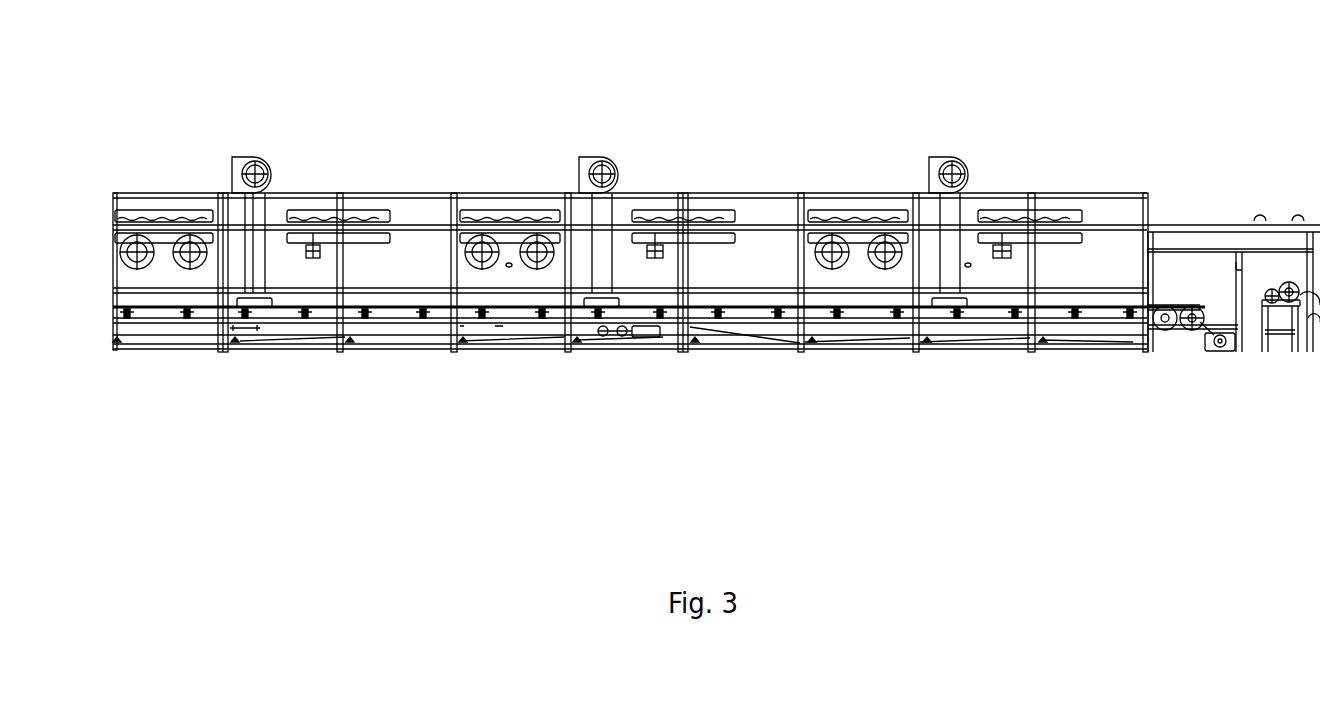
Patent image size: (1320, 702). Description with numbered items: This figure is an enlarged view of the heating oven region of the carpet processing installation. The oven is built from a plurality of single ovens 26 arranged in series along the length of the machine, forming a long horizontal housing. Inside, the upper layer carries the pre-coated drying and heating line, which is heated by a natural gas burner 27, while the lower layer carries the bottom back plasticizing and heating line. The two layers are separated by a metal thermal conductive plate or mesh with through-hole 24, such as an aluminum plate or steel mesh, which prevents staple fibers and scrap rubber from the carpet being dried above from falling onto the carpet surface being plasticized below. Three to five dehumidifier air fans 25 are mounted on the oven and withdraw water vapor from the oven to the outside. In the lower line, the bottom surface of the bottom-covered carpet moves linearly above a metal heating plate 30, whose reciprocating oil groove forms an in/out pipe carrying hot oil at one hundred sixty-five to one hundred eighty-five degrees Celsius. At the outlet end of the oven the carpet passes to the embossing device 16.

The embossing device 16 is at (1283, 290).
The metal thermal conductive plate or mesh with through-hole 24 is at (425, 295).
The dehumidifier air fan 25 is at (591, 160).
The single oven 26 is at (836, 205).
The natural gas burner 27 is at (313, 245).
The metal heating plate 30 is at (1038, 305).